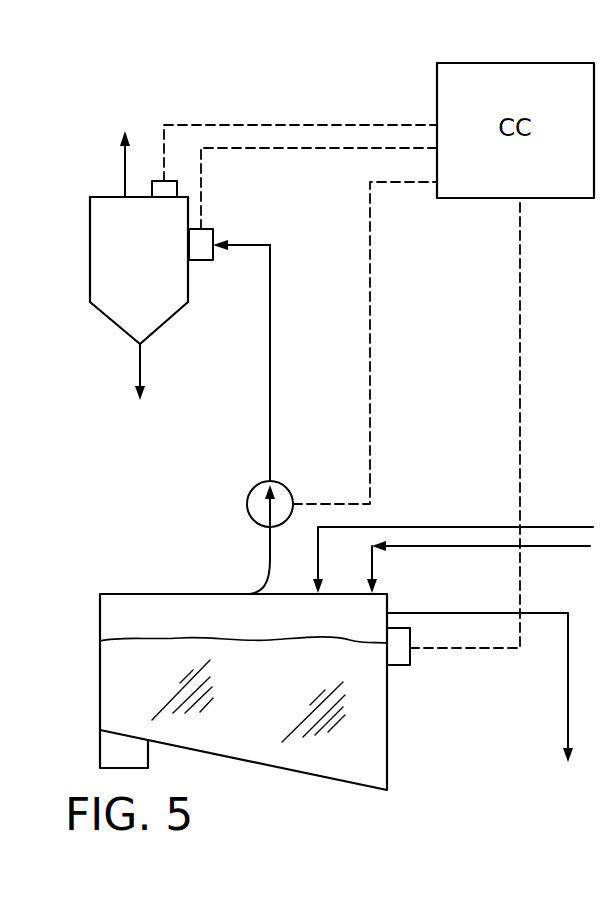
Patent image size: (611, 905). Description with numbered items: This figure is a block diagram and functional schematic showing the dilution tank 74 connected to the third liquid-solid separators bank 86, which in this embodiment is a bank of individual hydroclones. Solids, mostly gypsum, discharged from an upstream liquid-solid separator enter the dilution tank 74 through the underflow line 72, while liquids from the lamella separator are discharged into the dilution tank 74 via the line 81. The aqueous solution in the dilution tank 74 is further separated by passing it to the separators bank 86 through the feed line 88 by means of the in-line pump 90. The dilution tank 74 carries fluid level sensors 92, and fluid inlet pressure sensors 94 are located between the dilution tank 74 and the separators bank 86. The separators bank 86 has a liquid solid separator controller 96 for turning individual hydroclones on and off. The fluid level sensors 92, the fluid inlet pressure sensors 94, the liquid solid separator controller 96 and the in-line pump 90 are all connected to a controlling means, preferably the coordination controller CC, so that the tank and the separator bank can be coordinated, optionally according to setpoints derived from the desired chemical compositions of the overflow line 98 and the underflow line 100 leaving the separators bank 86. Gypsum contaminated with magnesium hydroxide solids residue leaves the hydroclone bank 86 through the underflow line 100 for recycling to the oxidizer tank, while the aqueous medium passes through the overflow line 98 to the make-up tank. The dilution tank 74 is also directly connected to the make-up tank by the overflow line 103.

The underflow line 72 is at (432, 527).
The dilution tank 74 is at (124, 578).
The line 81 is at (453, 547).
The third liquid-solid separators bank 86 is at (76, 254).
The feed line 88 is at (268, 432).
The in-line pump 90 is at (247, 503).
The fluid level sensors 92 is at (410, 658).
The fluid inlet pressure sensors 94 is at (208, 260).
The liquid solid separator controller 96 is at (177, 190).
The overflow line 98 is at (125, 165).
The underflow line 100 is at (140, 362).
The overflow line 103 is at (568, 705).